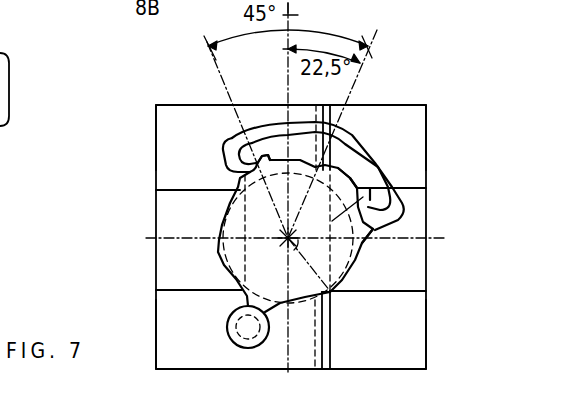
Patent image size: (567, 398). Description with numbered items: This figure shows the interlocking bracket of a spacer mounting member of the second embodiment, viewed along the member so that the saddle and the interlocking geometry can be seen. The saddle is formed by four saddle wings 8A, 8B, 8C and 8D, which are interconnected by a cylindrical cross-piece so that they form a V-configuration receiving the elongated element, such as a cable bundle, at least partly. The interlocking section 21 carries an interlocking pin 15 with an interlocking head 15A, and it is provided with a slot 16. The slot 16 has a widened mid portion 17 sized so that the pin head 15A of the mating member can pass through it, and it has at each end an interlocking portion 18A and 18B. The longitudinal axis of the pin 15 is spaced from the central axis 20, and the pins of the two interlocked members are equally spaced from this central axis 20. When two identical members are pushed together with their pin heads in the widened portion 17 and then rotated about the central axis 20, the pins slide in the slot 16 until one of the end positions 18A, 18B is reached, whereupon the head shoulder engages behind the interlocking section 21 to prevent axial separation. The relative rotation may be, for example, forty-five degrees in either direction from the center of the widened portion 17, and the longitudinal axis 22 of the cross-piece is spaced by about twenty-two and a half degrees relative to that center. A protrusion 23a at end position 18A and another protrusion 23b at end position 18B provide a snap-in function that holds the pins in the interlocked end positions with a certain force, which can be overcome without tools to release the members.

The saddle wing 8A is at (426, 343).
The saddle wing 8B is at (158, 367).
The saddle wing 8C is at (423, 112).
The saddle wing 8D is at (167, 118).
The interlocking pin 15 is at (236, 336).
The interlocking head 15A is at (230, 316).
The slot 16 is at (378, 165).
The widened mid portion 17 is at (338, 143).
The interlocking portion 18A is at (232, 136).
The interlocking portion 18B is at (398, 214).
The central axis 20 is at (331, 292).
The interlocking section 21 is at (230, 216).
The longitudinal axis of the cross-piece 22 is at (302, 14).
The protrusion 23a is at (223, 171).
The protrusion 23b is at (360, 240).